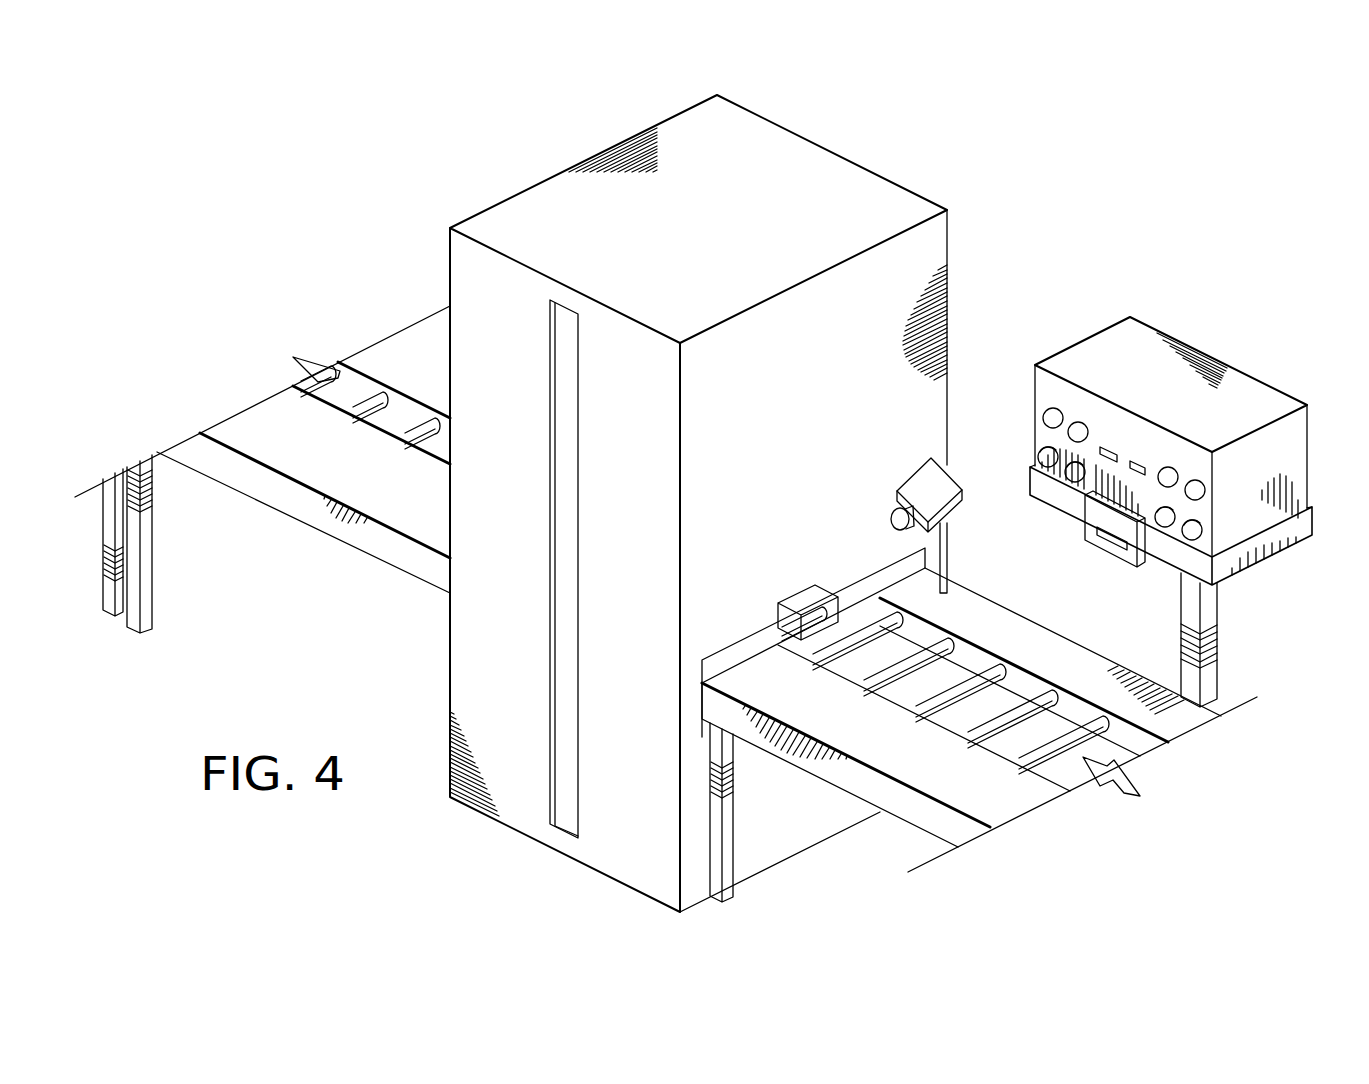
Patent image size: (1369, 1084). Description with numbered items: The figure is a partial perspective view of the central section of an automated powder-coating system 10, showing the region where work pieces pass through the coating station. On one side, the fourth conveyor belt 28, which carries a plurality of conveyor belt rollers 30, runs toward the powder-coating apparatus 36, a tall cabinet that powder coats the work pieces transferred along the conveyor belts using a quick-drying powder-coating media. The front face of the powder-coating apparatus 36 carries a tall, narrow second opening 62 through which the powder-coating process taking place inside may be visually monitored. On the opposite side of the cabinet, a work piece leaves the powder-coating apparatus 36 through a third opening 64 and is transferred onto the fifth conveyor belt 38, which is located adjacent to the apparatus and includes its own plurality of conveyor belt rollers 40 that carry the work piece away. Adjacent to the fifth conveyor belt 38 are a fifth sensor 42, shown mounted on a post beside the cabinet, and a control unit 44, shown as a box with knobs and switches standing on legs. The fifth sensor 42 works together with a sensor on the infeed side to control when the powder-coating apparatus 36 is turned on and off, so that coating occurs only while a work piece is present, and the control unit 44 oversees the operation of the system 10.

The automated powder-coating system 10 is at (183, 130).
The fourth conveyor belt 28 is at (248, 414).
The conveyor belt rollers 30 is at (371, 420).
The powder-coating apparatus 36 is at (821, 147).
The fifth conveyor belt 38 is at (987, 612).
The conveyor belt rollers 40 is at (1032, 693).
The fifth sensor 42 is at (952, 464).
The control unit 44 is at (1248, 380).
The second opening 62 is at (578, 588).
The third opening 64 is at (730, 655).